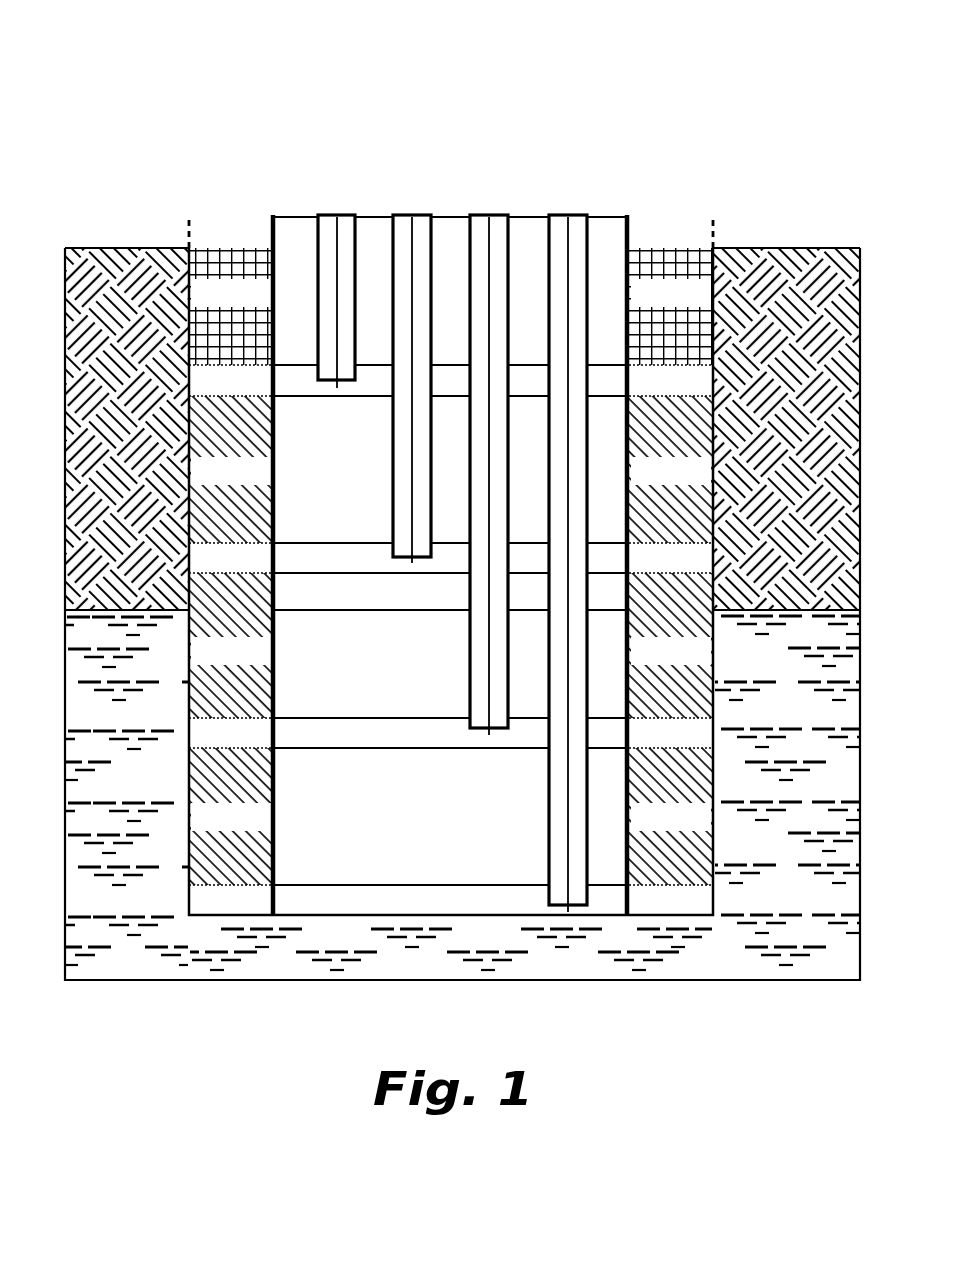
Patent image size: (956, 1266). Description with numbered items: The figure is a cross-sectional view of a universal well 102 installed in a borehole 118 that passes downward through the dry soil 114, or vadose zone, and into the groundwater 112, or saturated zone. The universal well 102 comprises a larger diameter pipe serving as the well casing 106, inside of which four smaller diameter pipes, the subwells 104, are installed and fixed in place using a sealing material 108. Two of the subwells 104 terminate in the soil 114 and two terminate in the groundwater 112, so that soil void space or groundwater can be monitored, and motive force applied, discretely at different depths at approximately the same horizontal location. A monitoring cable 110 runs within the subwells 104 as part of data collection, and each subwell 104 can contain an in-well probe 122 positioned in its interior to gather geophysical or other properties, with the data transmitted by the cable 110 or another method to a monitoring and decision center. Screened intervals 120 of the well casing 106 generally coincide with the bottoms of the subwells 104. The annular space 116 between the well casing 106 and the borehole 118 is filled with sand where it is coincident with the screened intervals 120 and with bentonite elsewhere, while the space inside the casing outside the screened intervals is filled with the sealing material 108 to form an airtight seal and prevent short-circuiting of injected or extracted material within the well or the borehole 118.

The universal well 102 is at (478, 461).
The subwells 104 is at (553, 216).
The well casing 106 is at (272, 232).
The sealing material 108 is at (450, 591).
The monitoring cable 110 is at (373, 492).
The groundwater 112 is at (148, 890).
The soil 114 is at (115, 318).
The annular space 116 is at (525, 502).
The borehole 118 is at (718, 222).
The screened interval 120 is at (627, 379).
The in-well probe 122 is at (338, 258).